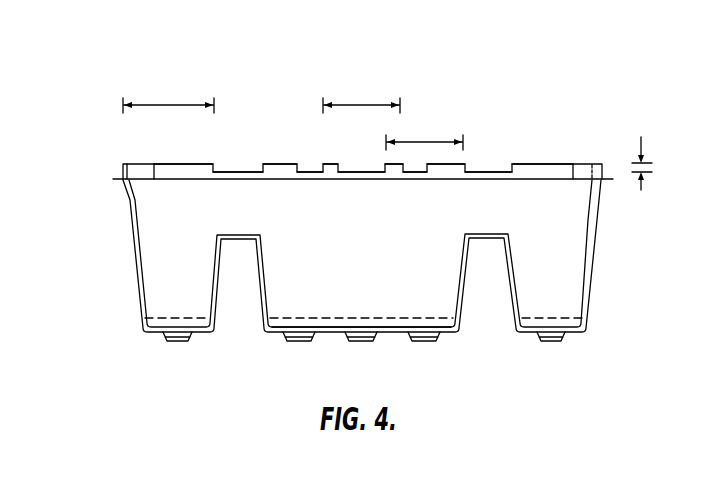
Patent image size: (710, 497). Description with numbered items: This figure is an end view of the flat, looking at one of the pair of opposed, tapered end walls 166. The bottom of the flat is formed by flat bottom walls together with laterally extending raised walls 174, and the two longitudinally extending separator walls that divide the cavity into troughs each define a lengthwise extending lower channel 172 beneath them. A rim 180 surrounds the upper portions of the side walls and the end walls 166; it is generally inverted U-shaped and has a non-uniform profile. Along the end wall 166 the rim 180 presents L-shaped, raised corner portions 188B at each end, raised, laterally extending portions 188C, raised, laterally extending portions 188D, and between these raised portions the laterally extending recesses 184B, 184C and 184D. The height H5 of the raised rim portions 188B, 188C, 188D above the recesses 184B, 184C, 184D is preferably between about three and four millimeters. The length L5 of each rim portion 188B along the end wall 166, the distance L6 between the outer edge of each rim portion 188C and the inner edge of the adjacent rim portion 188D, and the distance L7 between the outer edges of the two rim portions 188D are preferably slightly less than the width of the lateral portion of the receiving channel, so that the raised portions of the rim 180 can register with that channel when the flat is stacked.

The end wall 166 is at (342, 267).
The lower channel 172 is at (236, 308).
The raised wall 174 is at (168, 316).
The rim 180 is at (606, 158).
The laterally extending recess 184B is at (487, 164).
The laterally extending recess 184C is at (303, 182).
The laterally extending recess 184D is at (360, 171).
The L-shaped raised corner portion 188B is at (165, 164).
The raised laterally extending portion 188C is at (292, 164).
The raised laterally extending portion 188D is at (388, 181).
The length of rim portion 188B L5 is at (174, 103).
The distance between rim portions 188C and 188D L6 is at (427, 141).
The distance between outer edges of rim portions 188D L7 is at (362, 103).
The height of rim portions H5 is at (642, 190).